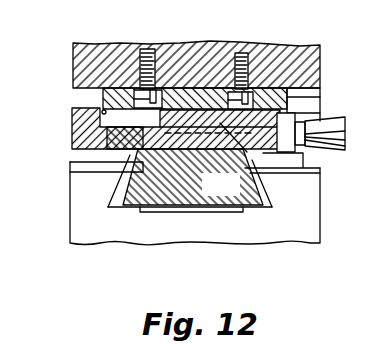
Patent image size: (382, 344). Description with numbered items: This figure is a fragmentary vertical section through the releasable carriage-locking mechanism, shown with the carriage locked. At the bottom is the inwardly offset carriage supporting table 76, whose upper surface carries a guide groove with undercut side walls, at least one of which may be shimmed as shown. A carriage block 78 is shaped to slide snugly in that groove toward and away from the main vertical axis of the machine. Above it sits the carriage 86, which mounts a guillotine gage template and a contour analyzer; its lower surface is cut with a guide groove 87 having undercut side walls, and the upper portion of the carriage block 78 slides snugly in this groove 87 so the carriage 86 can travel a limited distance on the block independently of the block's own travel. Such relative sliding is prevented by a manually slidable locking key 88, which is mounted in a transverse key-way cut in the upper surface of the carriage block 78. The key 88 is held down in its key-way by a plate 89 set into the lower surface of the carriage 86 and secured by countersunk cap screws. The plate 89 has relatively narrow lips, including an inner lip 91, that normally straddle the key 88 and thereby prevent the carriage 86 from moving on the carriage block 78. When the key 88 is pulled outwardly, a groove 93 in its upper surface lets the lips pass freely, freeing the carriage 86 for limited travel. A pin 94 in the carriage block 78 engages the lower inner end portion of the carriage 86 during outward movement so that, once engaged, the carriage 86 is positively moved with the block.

The carriage 86 is at (292, 48).
The plate 89 is at (320, 97).
The groove 93 is at (116, 107).
The pin 94 is at (320, 174).
The inner lip 91 is at (207, 153).
The guide groove 87 is at (185, 166).
The locking key 88 is at (303, 155).
The carriage block 78 is at (196, 212).
The carriage supporting table 76 is at (246, 233).